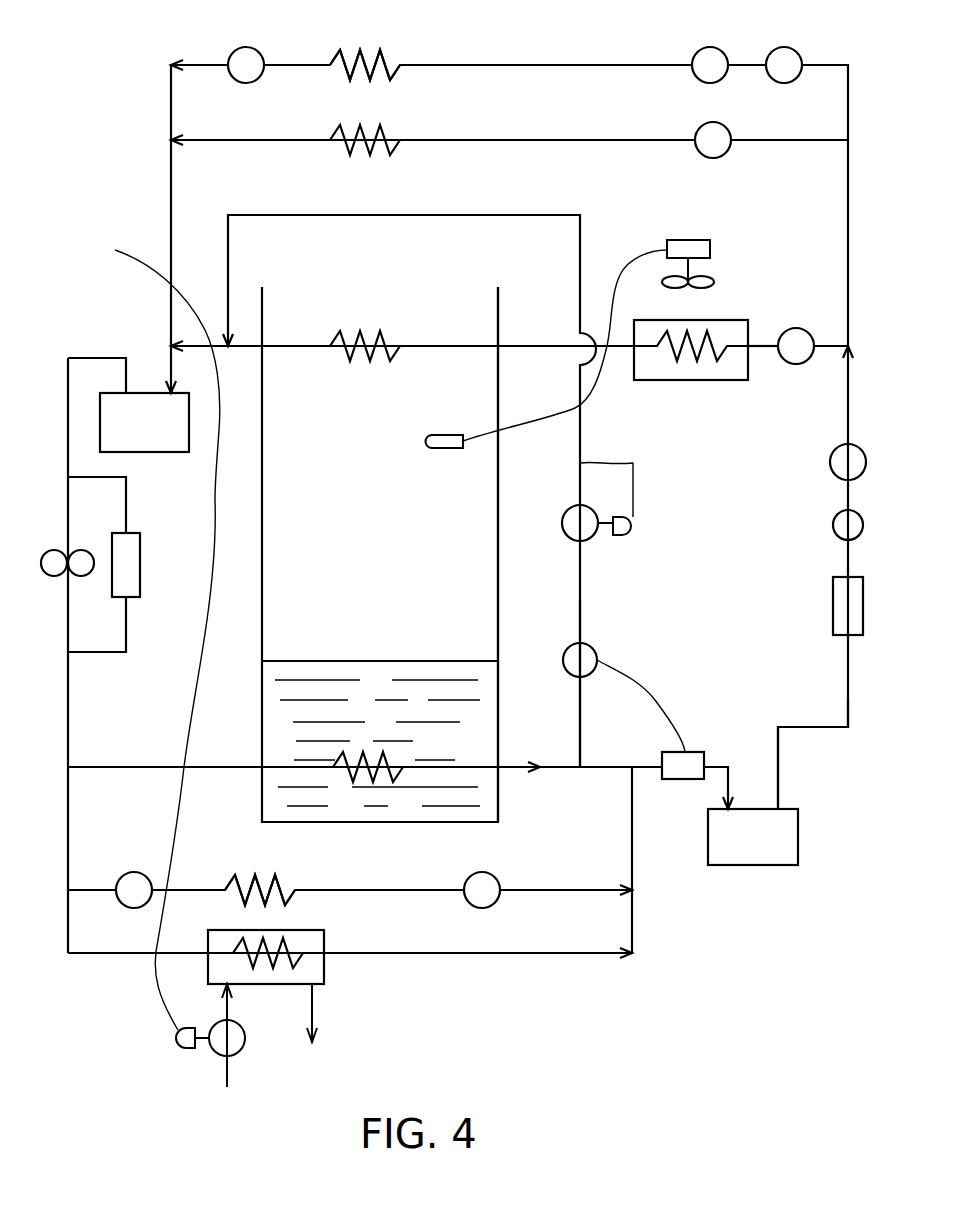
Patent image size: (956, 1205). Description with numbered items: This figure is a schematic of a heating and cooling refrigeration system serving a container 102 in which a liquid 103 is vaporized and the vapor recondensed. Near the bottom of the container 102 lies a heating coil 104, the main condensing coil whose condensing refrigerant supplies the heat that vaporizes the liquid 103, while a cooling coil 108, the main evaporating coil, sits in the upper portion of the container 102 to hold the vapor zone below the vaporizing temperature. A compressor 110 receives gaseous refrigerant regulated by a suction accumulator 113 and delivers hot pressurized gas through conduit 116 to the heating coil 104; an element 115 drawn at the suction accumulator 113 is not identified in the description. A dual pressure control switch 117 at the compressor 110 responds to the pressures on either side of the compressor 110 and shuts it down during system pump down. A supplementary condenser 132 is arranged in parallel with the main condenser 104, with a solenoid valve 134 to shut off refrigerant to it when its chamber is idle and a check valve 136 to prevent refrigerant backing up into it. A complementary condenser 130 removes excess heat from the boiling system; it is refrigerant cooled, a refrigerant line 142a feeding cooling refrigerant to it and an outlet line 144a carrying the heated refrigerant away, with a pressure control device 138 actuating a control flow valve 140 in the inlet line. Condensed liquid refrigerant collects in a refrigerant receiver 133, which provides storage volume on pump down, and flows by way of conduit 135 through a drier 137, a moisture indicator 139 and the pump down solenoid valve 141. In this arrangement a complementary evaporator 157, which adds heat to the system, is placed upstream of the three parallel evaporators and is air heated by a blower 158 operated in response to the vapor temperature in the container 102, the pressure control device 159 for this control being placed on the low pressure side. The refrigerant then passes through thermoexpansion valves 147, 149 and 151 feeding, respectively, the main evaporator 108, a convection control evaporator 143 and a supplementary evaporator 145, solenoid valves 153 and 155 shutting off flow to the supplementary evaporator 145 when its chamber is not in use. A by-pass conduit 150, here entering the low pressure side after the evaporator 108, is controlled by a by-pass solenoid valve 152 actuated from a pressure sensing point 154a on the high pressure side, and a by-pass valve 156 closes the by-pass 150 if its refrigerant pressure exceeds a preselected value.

The container 102 is at (498, 572).
The liquid 103 is at (463, 695).
The heating coil 104 is at (393, 757).
The cooling coil 108 is at (374, 362).
The compressor 110 is at (52, 578).
The suction accumulator 113 is at (152, 393).
The connection line 115 is at (102, 474).
The conduit 116 is at (170, 767).
The dual pressure control switch 117 is at (140, 564).
The complementary condenser 130 is at (325, 946).
The supplementary condenser 132 is at (284, 878).
The refrigerant receiver 133 is at (800, 850).
The solenoid valve 134 is at (142, 873).
The conduit 135 is at (800, 727).
The check valve 136 is at (496, 878).
The drier 137 is at (832, 612).
The pressure control device 138 is at (145, 635).
The moisture indicator 139 is at (832, 525).
The control flow valve 140 is at (176, 1046).
The pump down solenoid valve 141 is at (829, 462).
The refrigerant line 142a is at (230, 1008).
The convection control evaporator 143 is at (368, 128).
The outlet line 144a is at (314, 1008).
The supplementary evaporator 145 is at (350, 50).
The thermoexpansion valve 147 is at (810, 332).
The thermoexpansion valve 149 is at (722, 125).
The by-pass conduit 150 is at (582, 720).
The thermoexpansion valve 151 is at (710, 47).
The by-pass solenoid valve 152 is at (570, 648).
The solenoid valve 153 is at (782, 47).
The pressure sensing point 154a is at (692, 752).
The solenoid valve 155 is at (246, 47).
The by-pass valve 156 is at (613, 536).
The complementary evaporator 157 is at (712, 381).
The blower 158 is at (694, 240).
The pressure control device 159 is at (445, 450).